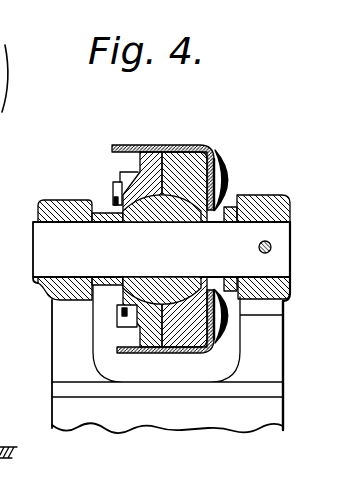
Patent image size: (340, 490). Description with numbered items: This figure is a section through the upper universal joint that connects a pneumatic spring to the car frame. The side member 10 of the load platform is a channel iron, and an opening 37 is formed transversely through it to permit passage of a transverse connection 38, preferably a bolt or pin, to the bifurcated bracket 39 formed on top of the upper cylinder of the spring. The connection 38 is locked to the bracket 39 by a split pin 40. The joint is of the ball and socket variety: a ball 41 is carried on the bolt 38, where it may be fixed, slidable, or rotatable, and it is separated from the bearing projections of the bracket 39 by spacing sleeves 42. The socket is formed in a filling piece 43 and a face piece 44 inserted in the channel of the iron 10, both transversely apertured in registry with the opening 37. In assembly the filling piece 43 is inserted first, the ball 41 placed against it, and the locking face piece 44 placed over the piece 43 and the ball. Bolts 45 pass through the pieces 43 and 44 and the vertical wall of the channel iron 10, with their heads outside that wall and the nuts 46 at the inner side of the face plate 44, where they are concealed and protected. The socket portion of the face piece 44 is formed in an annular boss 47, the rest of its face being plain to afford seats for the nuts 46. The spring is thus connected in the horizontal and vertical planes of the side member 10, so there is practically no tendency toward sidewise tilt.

The side member 10 is at (202, 231).
The opening 37 is at (222, 207).
The transverse connection 38 is at (280, 230).
The bifurcated bracket 39 is at (265, 363).
The split pin 40 is at (288, 275).
The ball 41 is at (217, 167).
The spacing sleeves 42 is at (98, 213).
The filling piece 43 is at (188, 162).
The face piece 44 is at (153, 146).
The bolts 45 is at (282, 315).
The nuts 46 is at (125, 328).
The annular boss 47 is at (118, 317).